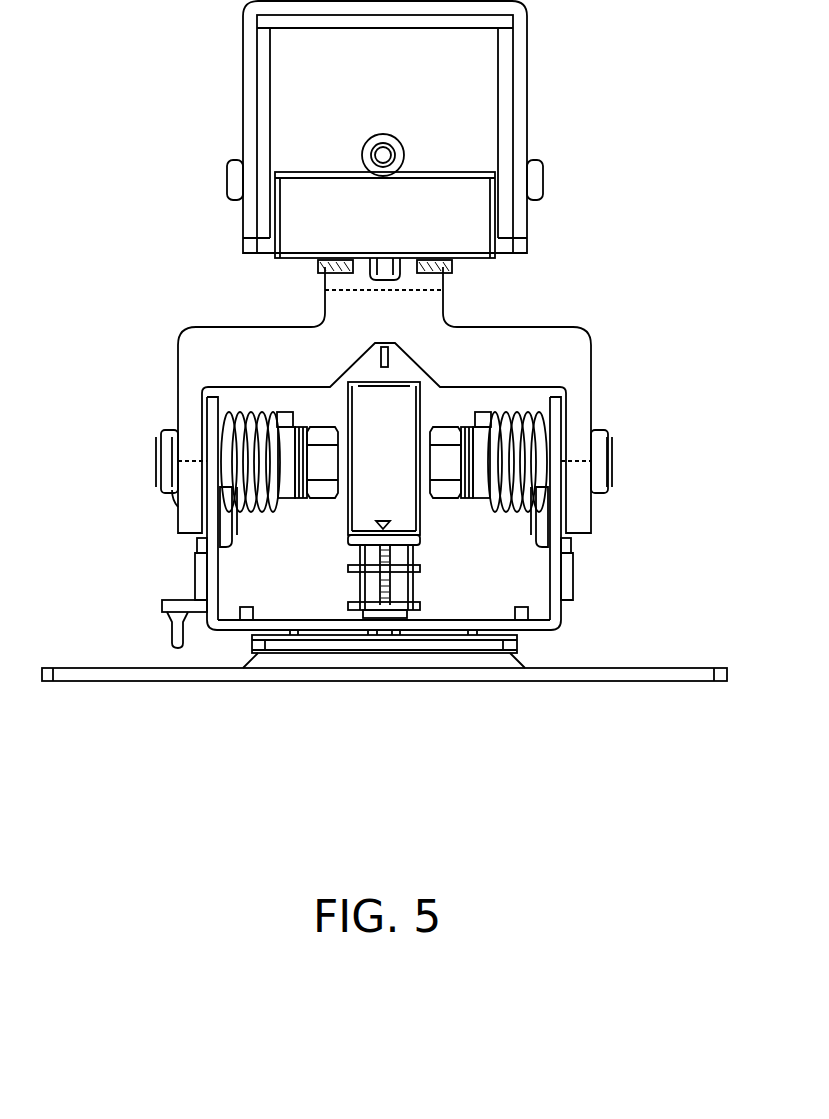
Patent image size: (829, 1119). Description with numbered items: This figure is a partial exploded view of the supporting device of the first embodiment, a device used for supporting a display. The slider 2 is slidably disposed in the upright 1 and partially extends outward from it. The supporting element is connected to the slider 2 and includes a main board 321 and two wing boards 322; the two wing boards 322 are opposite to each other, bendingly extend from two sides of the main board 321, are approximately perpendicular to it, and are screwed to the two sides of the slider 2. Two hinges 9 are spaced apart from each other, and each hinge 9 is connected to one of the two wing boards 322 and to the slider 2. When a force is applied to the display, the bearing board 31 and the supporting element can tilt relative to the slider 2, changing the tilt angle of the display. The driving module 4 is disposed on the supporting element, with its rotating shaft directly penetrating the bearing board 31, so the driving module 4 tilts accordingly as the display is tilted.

The upright 1 is at (527, 113).
The slider 2 is at (582, 363).
The hinge 9 is at (265, 412).
The driving module 4 is at (425, 540).
The bearing board 31 is at (580, 672).
The main board 321 is at (315, 622).
The wing boards 322 is at (212, 410).